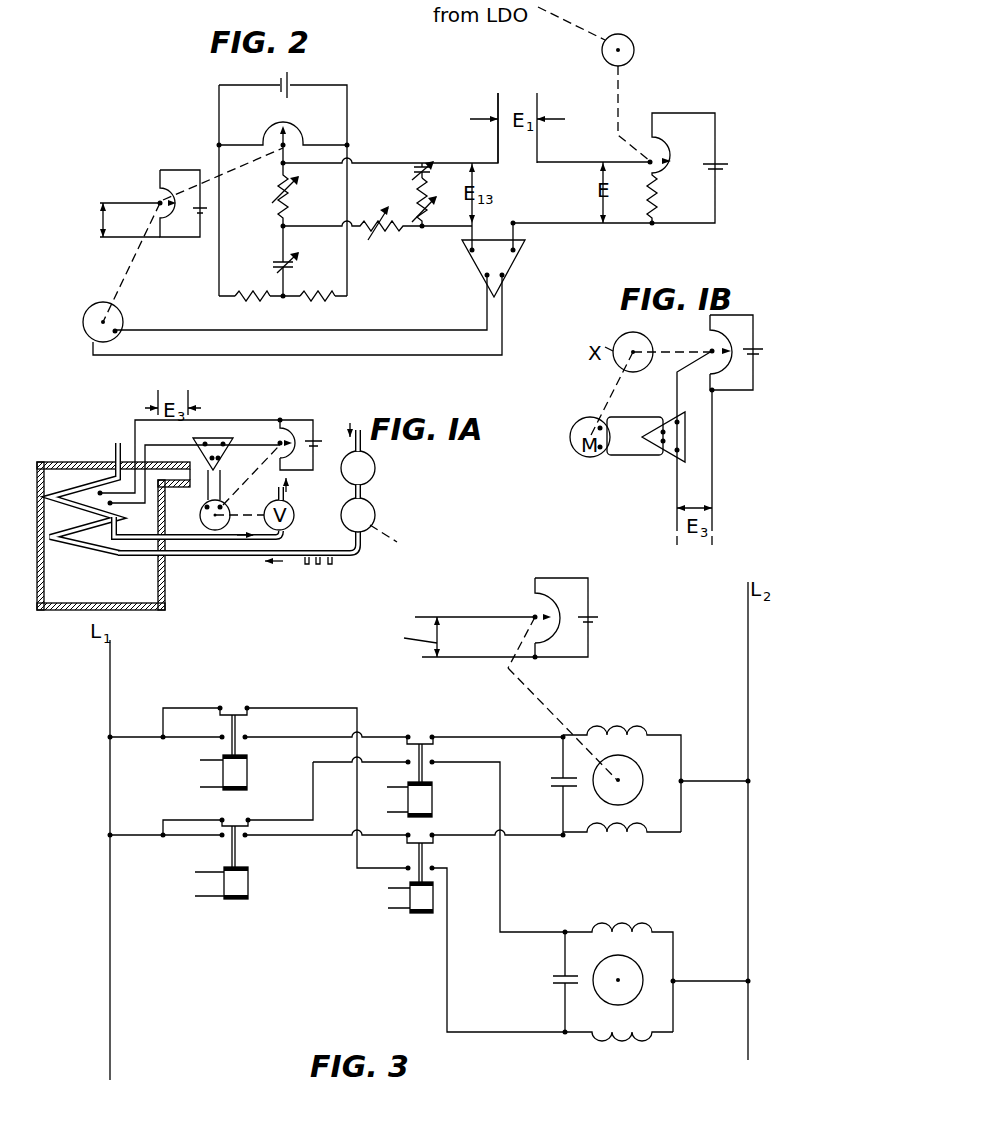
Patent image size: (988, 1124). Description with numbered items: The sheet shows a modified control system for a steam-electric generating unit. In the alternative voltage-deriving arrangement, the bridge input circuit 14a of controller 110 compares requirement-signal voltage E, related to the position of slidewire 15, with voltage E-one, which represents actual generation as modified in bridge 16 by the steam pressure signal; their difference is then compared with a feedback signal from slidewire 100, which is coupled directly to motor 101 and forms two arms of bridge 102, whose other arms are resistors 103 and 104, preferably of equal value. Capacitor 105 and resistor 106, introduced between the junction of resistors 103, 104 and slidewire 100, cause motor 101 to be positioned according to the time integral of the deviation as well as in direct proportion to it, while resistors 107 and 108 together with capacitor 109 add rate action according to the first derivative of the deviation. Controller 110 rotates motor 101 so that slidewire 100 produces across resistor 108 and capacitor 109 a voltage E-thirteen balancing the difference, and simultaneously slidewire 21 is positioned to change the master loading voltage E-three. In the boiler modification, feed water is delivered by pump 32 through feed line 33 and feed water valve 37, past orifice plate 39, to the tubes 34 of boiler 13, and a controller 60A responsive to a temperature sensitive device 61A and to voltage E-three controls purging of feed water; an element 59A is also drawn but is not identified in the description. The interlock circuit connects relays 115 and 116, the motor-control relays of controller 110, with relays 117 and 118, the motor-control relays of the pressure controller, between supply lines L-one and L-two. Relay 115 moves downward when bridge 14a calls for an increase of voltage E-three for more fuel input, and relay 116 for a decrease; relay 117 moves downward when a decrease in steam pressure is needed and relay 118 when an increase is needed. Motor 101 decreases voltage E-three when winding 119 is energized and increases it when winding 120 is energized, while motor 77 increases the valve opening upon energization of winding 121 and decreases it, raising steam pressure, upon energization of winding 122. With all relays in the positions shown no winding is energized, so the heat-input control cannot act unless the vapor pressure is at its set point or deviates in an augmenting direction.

In FIG. 1A, the vapor generator or boiler 13 is at (90, 583).
In FIG. 2, the bridge input circuit 14a is at (563, 200).
In FIG. 2, the slidewire 15 is at (666, 174).
In FIG. 2, the bridge 16 is at (632, 46).
In FIG. 2, the slidewire 21 is at (164, 195).
In FIG. 3, the slidewire 21 is at (555, 595).
In FIG. 1A, the pump 32 is at (375, 464).
In FIG. 1A, the feed line 33 is at (208, 558).
In FIG. 1A, the tubes 34 is at (82, 508).
In FIG. 1A, the feed water valve 37 is at (375, 504).
In FIG. 1A, the orifice plate 39 is at (318, 550).
In FIG. 1A, the amplifier meter 59A is at (205, 520).
In FIG. 1A, the controller 60A is at (278, 441).
In FIG. 1A, the temperature sensitive device 61A is at (116, 506).
In FIG. 3, the motor 77 is at (634, 975).
In FIG. 2, the slidewire 100 is at (290, 134).
In FIG. 2, the motor 101 is at (87, 326).
In FIG. 3, the motor 101 is at (634, 772).
In FIG. 2, the bridge 102 is at (270, 228).
In FIG. 2, the resistor 103 is at (253, 298).
In FIG. 2, the resistor 104 is at (318, 298).
In FIG. 2, the capacitor 105 is at (291, 258).
In FIG. 2, the resistor 106 is at (296, 184).
In FIG. 2, the resistor 107 is at (389, 236).
In FIG. 2, the resistor 108 is at (444, 203).
In FIG. 2, the capacitor 109 is at (411, 172).
In FIG. 2, the controller 110 is at (518, 261).
In FIG. 3, the relay 115 is at (224, 884).
In FIG. 3, the relay 116 is at (223, 773).
In FIG. 3, the relay 117 is at (418, 907).
In FIG. 3, the relay 118 is at (433, 795).
In FIG. 3, the winding 119 is at (626, 722).
In FIG. 3, the winding 120 is at (633, 838).
In FIG. 3, the winding 121 is at (628, 1043).
In FIG. 3, the winding 122 is at (644, 923).